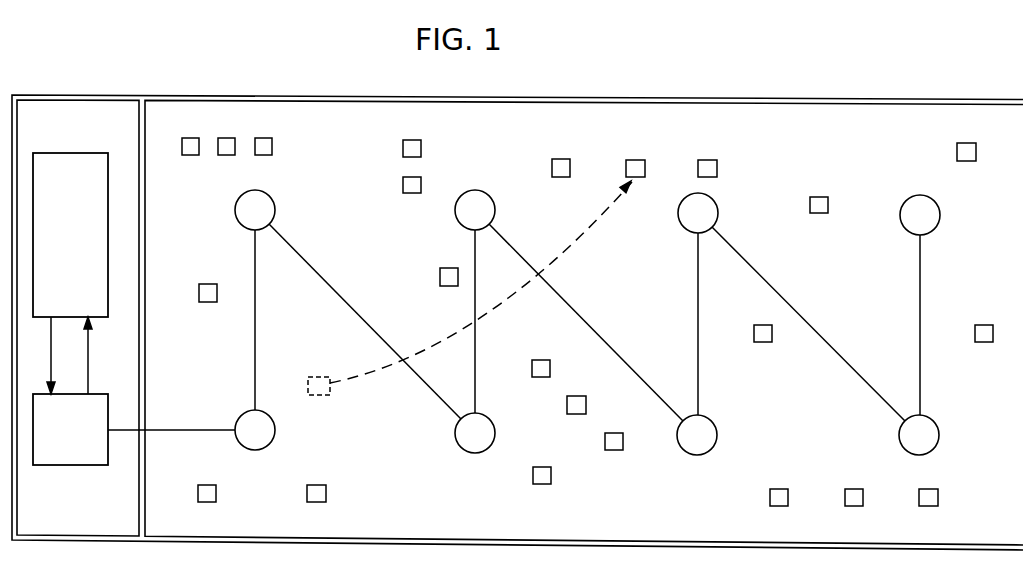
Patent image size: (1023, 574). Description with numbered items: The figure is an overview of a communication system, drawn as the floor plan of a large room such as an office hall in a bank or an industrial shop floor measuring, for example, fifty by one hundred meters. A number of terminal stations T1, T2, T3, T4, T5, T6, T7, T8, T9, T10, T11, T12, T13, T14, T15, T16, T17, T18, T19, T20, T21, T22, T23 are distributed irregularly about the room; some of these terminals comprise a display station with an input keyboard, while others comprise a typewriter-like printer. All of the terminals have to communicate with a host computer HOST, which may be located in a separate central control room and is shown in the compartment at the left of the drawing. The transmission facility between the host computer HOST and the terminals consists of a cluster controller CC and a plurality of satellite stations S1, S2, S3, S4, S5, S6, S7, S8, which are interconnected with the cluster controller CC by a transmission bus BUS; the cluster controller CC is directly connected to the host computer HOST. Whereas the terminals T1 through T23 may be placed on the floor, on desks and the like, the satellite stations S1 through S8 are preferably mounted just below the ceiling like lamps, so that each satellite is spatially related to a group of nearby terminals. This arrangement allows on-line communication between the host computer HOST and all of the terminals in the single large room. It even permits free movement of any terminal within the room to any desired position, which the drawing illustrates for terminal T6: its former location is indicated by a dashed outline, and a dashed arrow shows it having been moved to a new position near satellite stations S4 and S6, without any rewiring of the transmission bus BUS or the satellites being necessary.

The host computer HOST is at (70, 235).
The cluster controller CC is at (70, 429).
The transmission bus BUS is at (920, 326).
The satellite station S1 is at (266, 430).
The satellite station S2 is at (266, 210).
The satellite station S3 is at (486, 433).
The satellite station S4 is at (486, 210).
The satellite station S5 is at (708, 435).
The satellite station S6 is at (709, 213).
The satellite station S7 is at (930, 435).
The satellite station S8 is at (931, 215).
The terminal station T1 is at (190, 159).
The terminal station T2 is at (226, 159).
The terminal station T3 is at (263, 159).
The terminal station T4 is at (207, 281).
The terminal station T5 is at (220, 494).
The terminal station T6 is at (472, 265).
The terminal station T7 is at (329, 494).
The terminal station T8 is at (399, 149).
The terminal station T9 is at (399, 185).
The terminal station T10 is at (431, 277).
The terminal station T11 is at (559, 156).
The terminal station T12 is at (539, 356).
The terminal station T13 is at (592, 405).
The terminal station T14 is at (613, 453).
The terminal station T15 is at (541, 487).
The terminal station T16 is at (707, 156).
The terminal station T17 is at (818, 192).
The terminal station T18 is at (762, 347).
The terminal station T19 is at (778, 510).
The terminal station T20 is at (854, 510).
The terminal station T21 is at (927, 510).
The terminal station T22 is at (949, 153).
The terminal station T23 is at (986, 347).